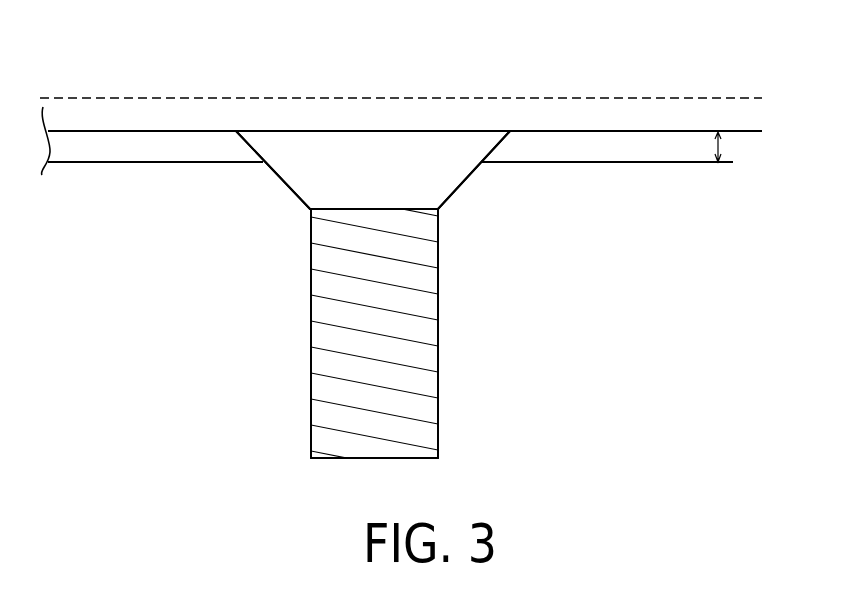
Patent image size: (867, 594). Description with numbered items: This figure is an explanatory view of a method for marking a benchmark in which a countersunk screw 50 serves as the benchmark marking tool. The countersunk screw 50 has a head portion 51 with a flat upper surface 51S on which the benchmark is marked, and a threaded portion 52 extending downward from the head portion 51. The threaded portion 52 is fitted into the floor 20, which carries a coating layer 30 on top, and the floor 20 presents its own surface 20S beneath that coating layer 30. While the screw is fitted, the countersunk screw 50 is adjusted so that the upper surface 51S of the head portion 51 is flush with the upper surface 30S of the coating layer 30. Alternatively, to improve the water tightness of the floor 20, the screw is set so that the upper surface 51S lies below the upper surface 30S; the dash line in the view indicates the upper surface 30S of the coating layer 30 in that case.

The floor 20 is at (171, 354).
The surface of first member 20S is at (193, 163).
The coating layer 30 is at (724, 146).
The upper surface of the coating layer 30S is at (585, 130).
The countersunk screw 50 is at (522, 213).
The head portion 51 is at (448, 199).
The upper surface of the head portion 51S is at (375, 130).
The threaded portion 52 is at (439, 293).